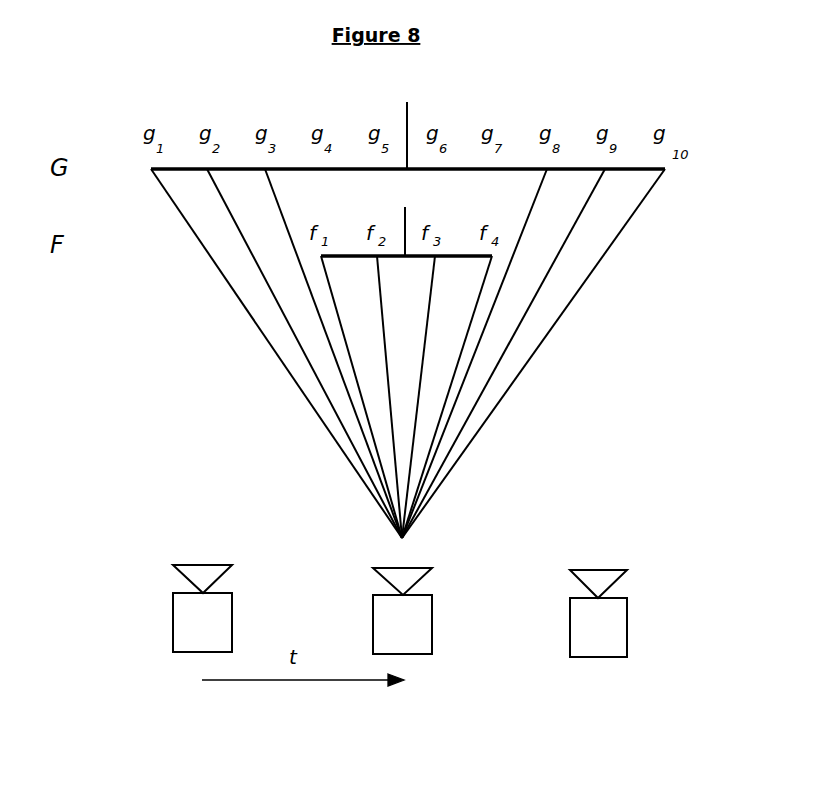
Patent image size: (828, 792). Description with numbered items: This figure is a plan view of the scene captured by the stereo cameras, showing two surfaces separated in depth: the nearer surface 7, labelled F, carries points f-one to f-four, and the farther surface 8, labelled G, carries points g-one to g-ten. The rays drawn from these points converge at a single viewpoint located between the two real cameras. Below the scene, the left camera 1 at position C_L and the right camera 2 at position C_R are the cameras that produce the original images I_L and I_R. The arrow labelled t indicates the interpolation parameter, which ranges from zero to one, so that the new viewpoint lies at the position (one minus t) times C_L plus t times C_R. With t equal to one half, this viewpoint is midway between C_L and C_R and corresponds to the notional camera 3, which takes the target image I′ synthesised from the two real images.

The camera 1 is at (227, 603).
The camera 2 is at (622, 612).
The notional camera 3 is at (420, 615).
The surface 7 is at (405, 219).
The surface 8 is at (407, 124).